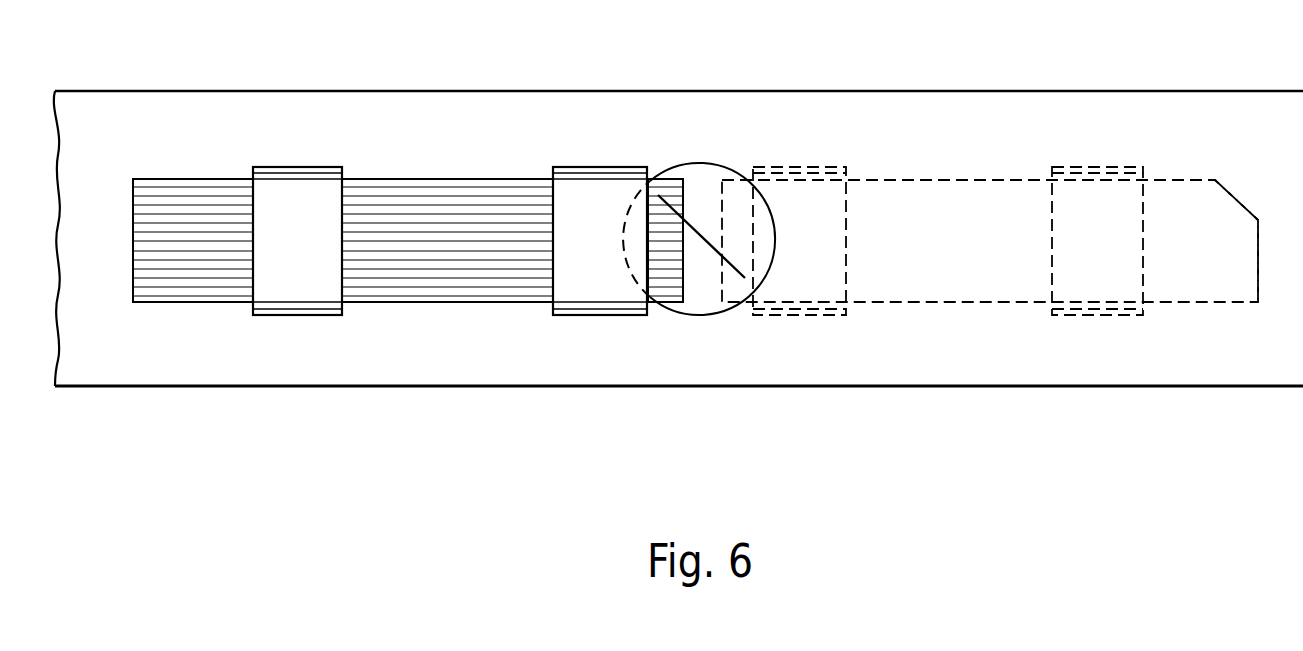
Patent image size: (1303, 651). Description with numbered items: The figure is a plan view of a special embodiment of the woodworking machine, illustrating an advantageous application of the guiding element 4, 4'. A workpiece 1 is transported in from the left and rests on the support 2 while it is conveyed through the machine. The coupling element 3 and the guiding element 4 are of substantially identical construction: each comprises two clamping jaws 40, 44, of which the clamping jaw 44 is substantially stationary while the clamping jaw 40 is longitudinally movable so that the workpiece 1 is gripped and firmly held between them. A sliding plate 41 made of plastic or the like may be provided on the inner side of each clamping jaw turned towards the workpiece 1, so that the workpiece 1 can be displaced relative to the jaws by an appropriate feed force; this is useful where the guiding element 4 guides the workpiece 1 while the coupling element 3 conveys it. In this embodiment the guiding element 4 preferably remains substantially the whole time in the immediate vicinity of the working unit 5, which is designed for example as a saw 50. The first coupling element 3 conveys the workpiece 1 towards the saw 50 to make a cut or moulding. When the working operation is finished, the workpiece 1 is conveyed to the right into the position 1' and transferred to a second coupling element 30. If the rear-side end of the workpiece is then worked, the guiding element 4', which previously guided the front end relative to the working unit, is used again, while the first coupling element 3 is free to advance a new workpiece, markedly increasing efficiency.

The workpiece 1 is at (408, 164).
The position of the workpiece 1' is at (1218, 164).
The support 2 is at (965, 138).
The coupling element 3 is at (292, 198).
The second coupling element 30 is at (1097, 200).
The guiding element 4 is at (600, 170).
The guiding element 4' is at (799, 170).
The clamping jaw 40 is at (327, 313).
The sliding plate 41 is at (328, 167).
The stationary clamping jaw 44 is at (270, 167).
The working unit 5 is at (688, 177).
The saw 50 is at (695, 225).